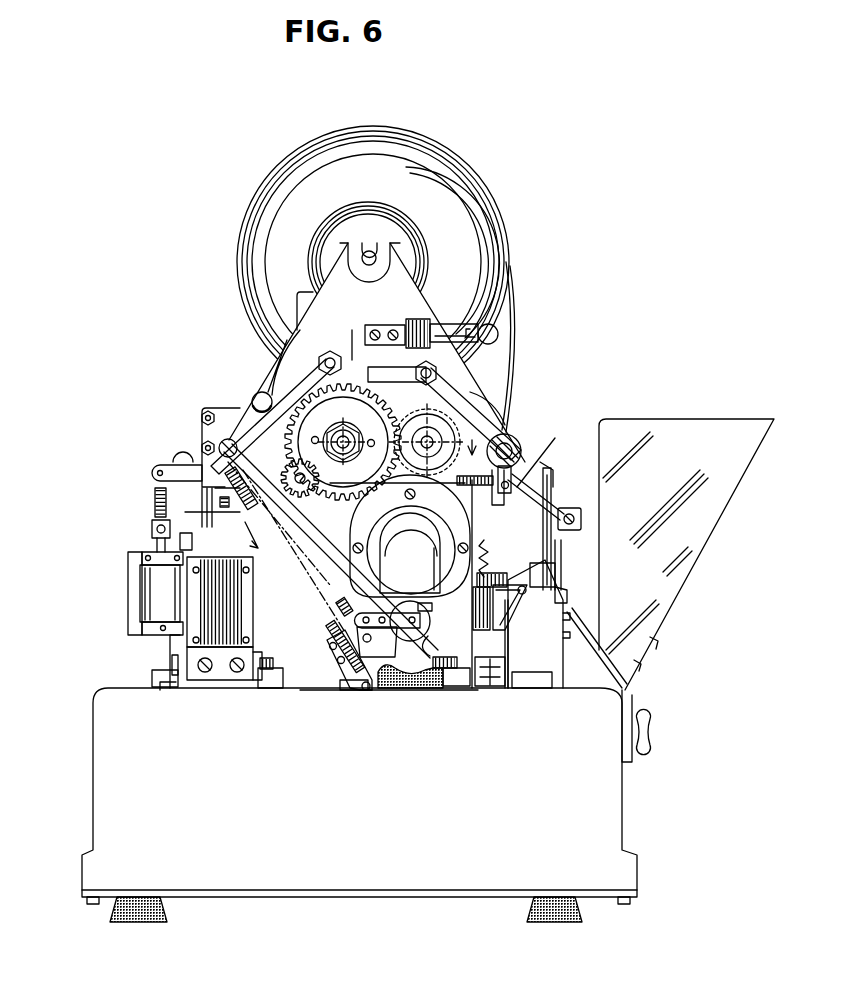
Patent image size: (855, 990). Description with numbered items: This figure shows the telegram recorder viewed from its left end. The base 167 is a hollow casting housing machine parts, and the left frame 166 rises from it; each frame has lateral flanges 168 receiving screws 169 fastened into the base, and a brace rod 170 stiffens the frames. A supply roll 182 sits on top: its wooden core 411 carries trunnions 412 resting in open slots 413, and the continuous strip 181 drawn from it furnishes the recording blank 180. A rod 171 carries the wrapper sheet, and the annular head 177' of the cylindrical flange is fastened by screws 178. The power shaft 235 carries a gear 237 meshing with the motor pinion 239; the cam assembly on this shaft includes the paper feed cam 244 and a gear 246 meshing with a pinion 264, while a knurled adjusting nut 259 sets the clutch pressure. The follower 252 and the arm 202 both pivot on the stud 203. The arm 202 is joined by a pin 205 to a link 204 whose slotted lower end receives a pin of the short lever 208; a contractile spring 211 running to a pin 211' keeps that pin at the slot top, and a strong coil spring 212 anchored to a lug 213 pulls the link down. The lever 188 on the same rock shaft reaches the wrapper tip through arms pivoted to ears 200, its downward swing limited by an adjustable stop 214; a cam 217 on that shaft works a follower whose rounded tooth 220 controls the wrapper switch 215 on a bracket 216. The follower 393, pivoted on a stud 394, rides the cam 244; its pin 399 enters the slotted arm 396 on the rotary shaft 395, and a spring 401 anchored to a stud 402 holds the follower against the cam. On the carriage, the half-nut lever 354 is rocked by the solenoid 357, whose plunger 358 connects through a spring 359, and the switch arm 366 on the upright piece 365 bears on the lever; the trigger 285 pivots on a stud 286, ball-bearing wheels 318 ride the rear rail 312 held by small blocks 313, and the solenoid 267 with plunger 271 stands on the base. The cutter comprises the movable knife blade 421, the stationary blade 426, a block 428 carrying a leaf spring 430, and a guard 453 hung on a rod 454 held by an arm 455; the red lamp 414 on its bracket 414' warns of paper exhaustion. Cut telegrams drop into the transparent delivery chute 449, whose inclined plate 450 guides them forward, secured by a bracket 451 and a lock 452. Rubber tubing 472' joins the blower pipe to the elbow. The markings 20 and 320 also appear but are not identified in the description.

The base 167 is at (110, 777).
The supply roll 182 is at (296, 172).
The core 411 is at (335, 243).
The open slots 413 is at (371, 251).
The trunnions 412 is at (370, 272).
The paper feed cam 244 is at (377, 352).
The bracket 414' is at (385, 324).
The red lamp 414 is at (482, 332).
The continuous strip 181 is at (511, 302).
The stud 203 is at (332, 352).
The arm 202 is at (325, 368).
The follower 393 is at (405, 369).
The stud 394 is at (441, 375).
The left frame 166 is at (485, 400).
The adjusting nut 259 is at (262, 391).
The brace rod 170 is at (257, 391).
The pinion 264 is at (417, 416).
The pin 399 is at (498, 400).
The arm 396 is at (502, 420).
The rotary shaft 395 is at (514, 440).
The follower 252 is at (243, 413).
The power shaft 235 is at (333, 409).
The gear 237 is at (318, 452).
The pin 205 is at (203, 412).
The upright piece 365 is at (202, 428).
The operating arm 366 is at (202, 448).
The lever 354 is at (158, 467).
The trigger 285 is at (213, 497).
The contractile spring 401 is at (476, 487).
The stud 402 is at (506, 500).
The guard 453 is at (572, 512).
The delivery chute 449 is at (700, 525).
The contractile spring 359 is at (155, 498).
The plunger 358 is at (152, 527).
The stud 286 is at (180, 540).
The pinion 239 is at (336, 516).
The gear 246 is at (352, 522).
The rod 171 is at (411, 500).
The annular head 177' is at (411, 550).
The screws 178 is at (458, 549).
The arm 455 is at (521, 497).
The knife blade 421 is at (543, 547).
The rod 454 is at (572, 560).
The stationary knife blade 426 is at (556, 584).
The recording blank 180 is at (513, 574).
The leaf spring 430 is at (568, 597).
The solenoid 357 is at (145, 582).
The direction of motion 20 is at (364, 503).
The plunger 271 is at (238, 563).
The link 204 is at (313, 592).
The contractile spring 211 is at (314, 609).
The coil spring 212 is at (330, 627).
The bracket 216 is at (328, 643).
The screws 169 is at (274, 661).
The pin 211' is at (377, 644).
The short lever 208 is at (388, 612).
The cam 217 is at (426, 612).
The rounded tooth 220 is at (427, 640).
The ears 200 is at (516, 600).
The ball-bearing wheels 318 is at (170, 643).
The plate 320 is at (166, 661).
The rear rail 312 is at (170, 666).
The lever 188 is at (500, 664).
The inclined plate 450 is at (590, 652).
The small blocks 313 is at (170, 694).
The solenoid 267 is at (220, 690).
The lateral flanges 168 is at (270, 690).
The wrapper switch 215 is at (345, 692).
The rubber tubing 472' is at (401, 690).
The adjustable stop 214 is at (535, 690).
The block 428 is at (548, 690).
The lug 213 is at (368, 700).
The bracket 451 is at (636, 708).
The lock 452 is at (650, 740).